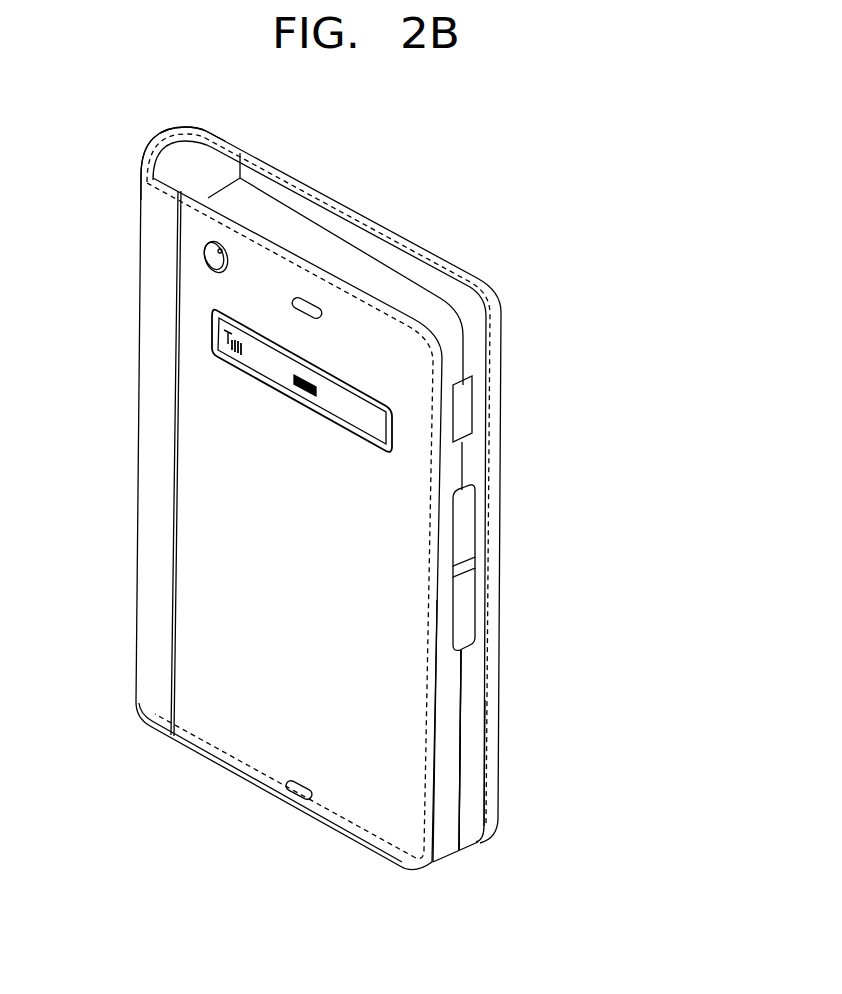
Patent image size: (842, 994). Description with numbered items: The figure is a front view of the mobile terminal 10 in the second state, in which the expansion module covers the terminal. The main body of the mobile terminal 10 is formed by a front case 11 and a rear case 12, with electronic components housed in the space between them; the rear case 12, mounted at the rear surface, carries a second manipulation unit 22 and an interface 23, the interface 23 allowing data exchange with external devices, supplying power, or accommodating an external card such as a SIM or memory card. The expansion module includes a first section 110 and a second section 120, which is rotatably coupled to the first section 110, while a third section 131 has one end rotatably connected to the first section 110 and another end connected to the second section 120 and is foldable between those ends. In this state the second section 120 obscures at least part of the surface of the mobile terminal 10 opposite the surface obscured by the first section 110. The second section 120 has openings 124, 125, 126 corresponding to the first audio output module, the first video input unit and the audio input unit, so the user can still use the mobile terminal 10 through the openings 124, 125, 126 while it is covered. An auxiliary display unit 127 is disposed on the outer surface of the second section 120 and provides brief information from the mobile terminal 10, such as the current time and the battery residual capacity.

The first section 110 is at (451, 260).
The third section 131 is at (162, 142).
The second section 120 is at (209, 542).
The mobile terminal 10 is at (480, 685).
The front case 11 is at (450, 770).
The rear case 12 is at (477, 735).
The second manipulation unit 22 is at (468, 607).
The interface 23 is at (465, 407).
The opening 124 is at (308, 304).
The opening 125 is at (205, 263).
The opening 126 is at (299, 792).
The auxiliary display unit 127 is at (270, 370).